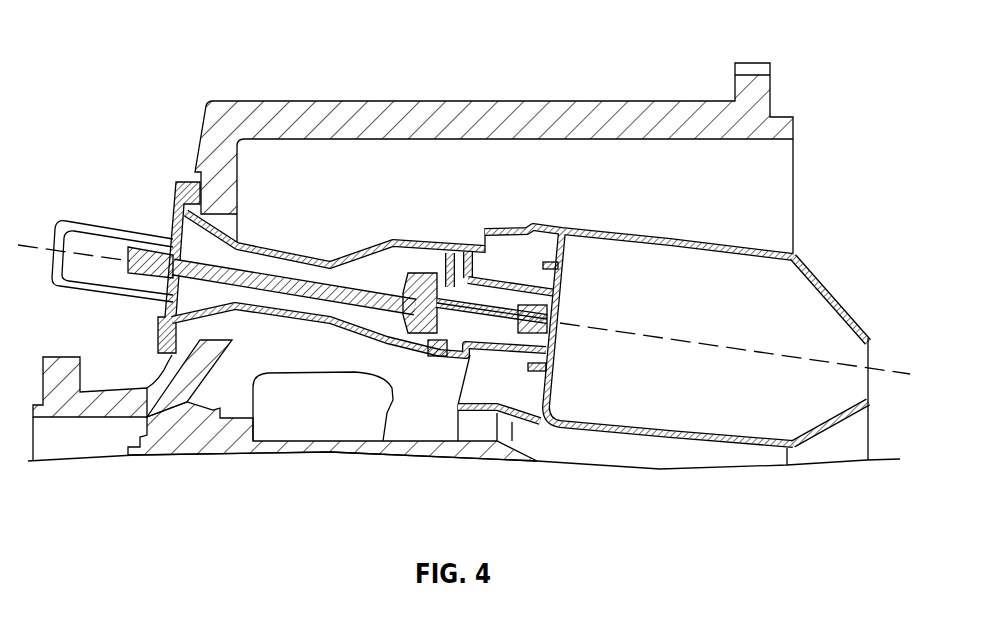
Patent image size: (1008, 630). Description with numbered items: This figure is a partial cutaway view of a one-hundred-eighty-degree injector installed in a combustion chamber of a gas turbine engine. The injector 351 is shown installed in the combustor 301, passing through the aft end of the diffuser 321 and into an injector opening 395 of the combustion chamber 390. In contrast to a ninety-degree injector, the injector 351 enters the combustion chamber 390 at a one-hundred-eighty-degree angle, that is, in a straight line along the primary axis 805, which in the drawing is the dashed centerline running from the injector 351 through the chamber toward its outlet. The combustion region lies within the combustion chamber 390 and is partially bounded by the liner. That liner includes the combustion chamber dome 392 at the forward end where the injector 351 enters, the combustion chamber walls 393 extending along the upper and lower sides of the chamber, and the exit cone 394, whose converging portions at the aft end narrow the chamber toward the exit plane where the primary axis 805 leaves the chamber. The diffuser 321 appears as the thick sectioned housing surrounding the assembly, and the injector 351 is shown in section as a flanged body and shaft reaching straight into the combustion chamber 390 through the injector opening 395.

The combustor 301 is at (700, 28).
The diffuser 321 is at (416, 88).
The injector 351 is at (156, 188).
The combustion chamber 390 is at (682, 233).
The combustion chamber dome 392 is at (586, 260).
The combustion chamber walls 393 is at (710, 257).
The exit cone 394 is at (824, 316).
The injector opening 395 is at (566, 366).
The primary axis 805 is at (878, 367).